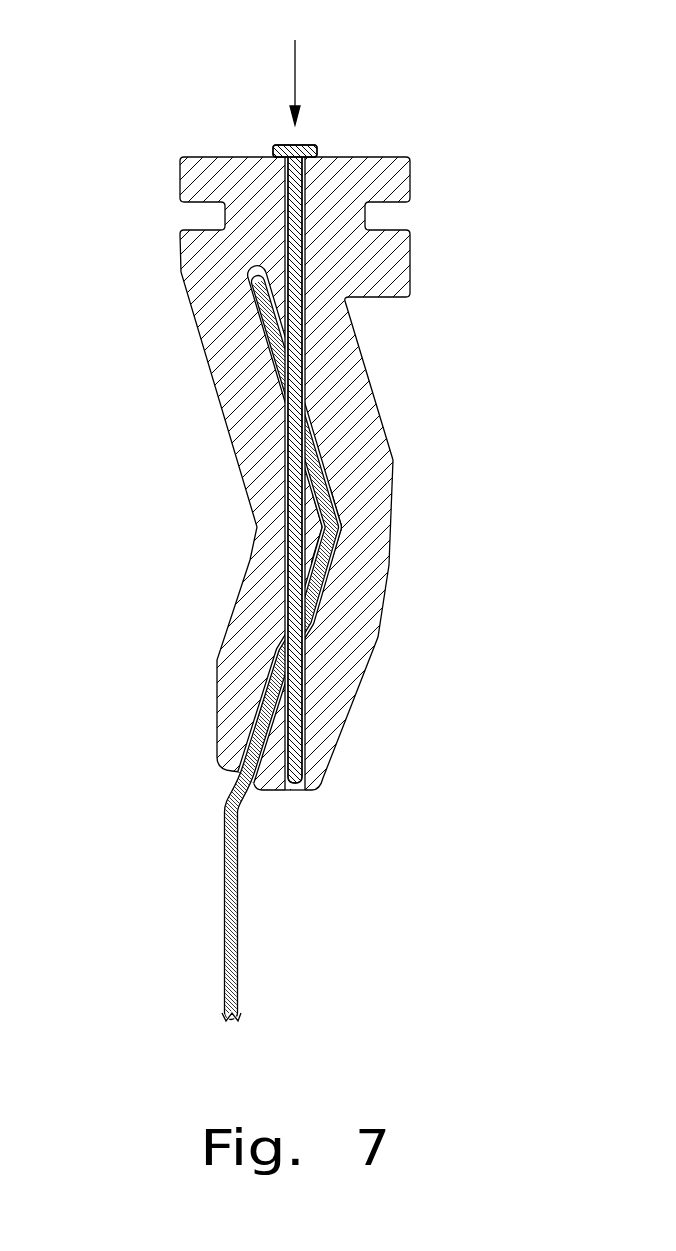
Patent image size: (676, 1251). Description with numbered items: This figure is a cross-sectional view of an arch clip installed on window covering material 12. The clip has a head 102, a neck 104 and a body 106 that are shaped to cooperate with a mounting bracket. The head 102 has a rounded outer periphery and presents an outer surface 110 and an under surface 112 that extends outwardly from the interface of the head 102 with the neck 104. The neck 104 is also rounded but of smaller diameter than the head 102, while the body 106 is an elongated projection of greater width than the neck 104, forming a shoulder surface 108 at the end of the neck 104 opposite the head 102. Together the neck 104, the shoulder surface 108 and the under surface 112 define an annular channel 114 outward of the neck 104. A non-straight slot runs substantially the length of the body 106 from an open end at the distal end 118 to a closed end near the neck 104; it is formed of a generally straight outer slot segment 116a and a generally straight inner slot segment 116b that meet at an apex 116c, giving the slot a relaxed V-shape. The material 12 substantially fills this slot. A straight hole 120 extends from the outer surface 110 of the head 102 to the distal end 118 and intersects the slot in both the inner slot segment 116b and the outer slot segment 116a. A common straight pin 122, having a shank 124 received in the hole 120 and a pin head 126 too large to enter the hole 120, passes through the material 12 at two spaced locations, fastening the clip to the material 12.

The material 12 is at (240, 958).
The head 102 is at (292, 484).
The neck 104 is at (252, 207).
The body 106 is at (385, 277).
The shoulder surface 108 is at (200, 223).
The outer surface 110 is at (385, 157).
The under surface 112 is at (197, 213).
The annular channel 114 is at (392, 215).
The outer slot segment 116a is at (330, 592).
The inner slot segment 116b is at (340, 435).
The apex 116c is at (347, 535).
The distal end 118 is at (313, 790).
The hole 120 is at (297, 790).
The pin 122 is at (295, 67).
The shank 124 is at (297, 238).
The pin head 126 is at (302, 147).